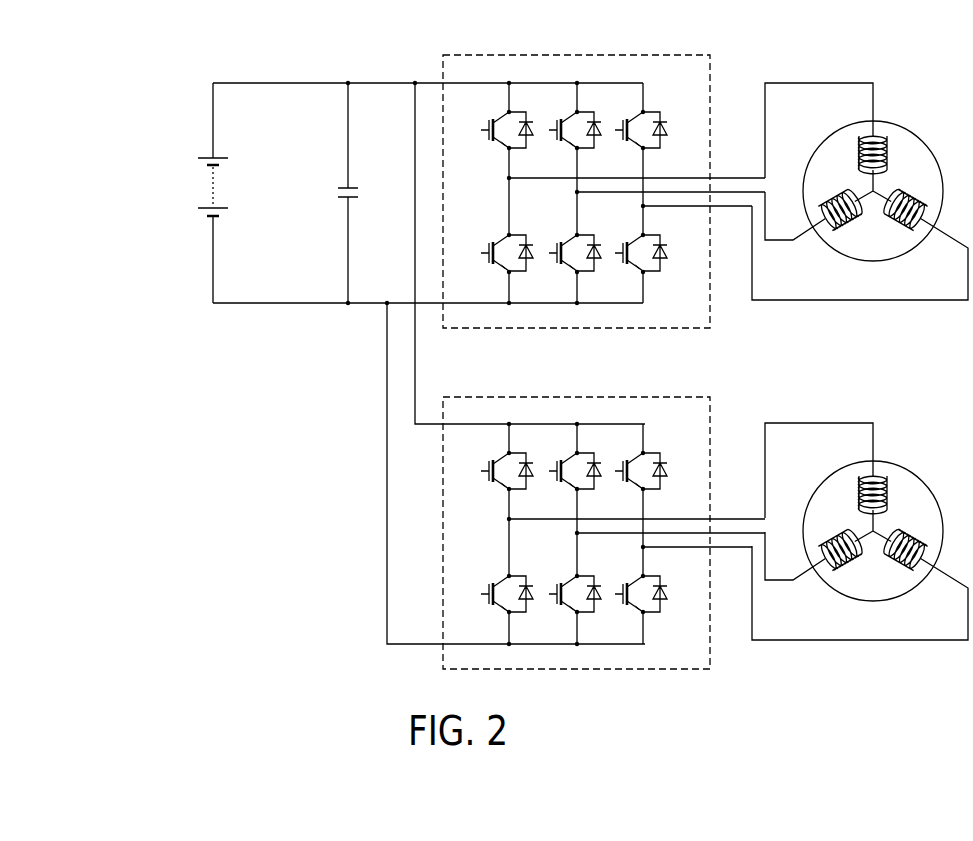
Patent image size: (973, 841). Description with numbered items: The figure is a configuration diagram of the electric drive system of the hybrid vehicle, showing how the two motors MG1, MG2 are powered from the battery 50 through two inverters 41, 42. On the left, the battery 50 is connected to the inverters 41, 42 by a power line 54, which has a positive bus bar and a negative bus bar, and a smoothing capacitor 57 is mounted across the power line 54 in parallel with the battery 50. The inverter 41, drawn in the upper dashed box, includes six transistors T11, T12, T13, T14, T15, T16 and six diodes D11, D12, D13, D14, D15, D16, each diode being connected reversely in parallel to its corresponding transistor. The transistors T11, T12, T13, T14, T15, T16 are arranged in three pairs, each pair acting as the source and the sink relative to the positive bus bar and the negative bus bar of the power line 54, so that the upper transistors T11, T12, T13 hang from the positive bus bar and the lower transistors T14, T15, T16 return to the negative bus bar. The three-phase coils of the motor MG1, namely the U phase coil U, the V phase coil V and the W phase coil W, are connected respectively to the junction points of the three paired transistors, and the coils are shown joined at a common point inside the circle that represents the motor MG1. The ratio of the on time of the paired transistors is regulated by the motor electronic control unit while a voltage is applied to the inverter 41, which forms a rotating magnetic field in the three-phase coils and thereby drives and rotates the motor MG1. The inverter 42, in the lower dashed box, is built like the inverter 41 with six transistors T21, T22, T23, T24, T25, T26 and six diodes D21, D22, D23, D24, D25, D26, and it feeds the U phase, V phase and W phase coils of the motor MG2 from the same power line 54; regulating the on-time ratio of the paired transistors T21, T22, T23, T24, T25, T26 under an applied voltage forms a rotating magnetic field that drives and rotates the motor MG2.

The battery 50 is at (208, 156).
The smoothing capacitor 57 is at (344, 186).
The power line 54 is at (405, 300).
The inverter 41 is at (604, 165).
The inverter 42 is at (604, 506).
The motor MG1 is at (860, 184).
The motor MG2 is at (903, 468).
The transistor T11 is at (488, 120).
The transistor T12 is at (556, 120).
The transistor T13 is at (622, 120).
The transistor T14 is at (488, 243).
The transistor T15 is at (556, 243).
The transistor T16 is at (622, 243).
The diode D11 is at (533, 146).
The diode D12 is at (601, 146).
The diode D13 is at (667, 146).
The diode D14 is at (533, 269).
The diode D15 is at (601, 269).
The diode D16 is at (667, 269).
The transistor T21 is at (488, 461).
The transistor T22 is at (556, 461).
The transistor T23 is at (622, 461).
The transistor T24 is at (488, 584).
The transistor T25 is at (556, 584).
The transistor T26 is at (622, 584).
The diode D21 is at (533, 487).
The diode D22 is at (601, 487).
The diode D23 is at (667, 487).
The diode D24 is at (533, 610).
The diode D25 is at (601, 610).
The diode D26 is at (667, 610).
The U phase coil U is at (868, 136).
The V phase coil V is at (824, 210).
The W phase coil W is at (921, 209).